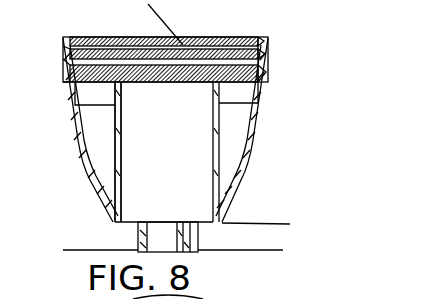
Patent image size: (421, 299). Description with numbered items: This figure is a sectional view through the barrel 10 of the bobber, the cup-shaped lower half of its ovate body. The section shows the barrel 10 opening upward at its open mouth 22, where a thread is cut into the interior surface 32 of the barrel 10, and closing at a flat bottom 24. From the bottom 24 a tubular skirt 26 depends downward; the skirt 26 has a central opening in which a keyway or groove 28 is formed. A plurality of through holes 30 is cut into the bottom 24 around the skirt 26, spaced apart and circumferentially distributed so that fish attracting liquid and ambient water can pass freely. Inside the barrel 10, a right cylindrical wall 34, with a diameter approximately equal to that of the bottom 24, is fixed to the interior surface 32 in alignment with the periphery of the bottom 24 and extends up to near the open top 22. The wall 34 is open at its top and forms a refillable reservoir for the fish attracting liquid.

The barrel 10 is at (256, 141).
The open mouth 22 is at (90, 37).
The through holes 30 is at (243, 36).
The interior surface 32 is at (83, 142).
The right cylindrical wall 34 is at (121, 166).
The flat bottom 24 is at (217, 223).
The tubular skirt 26 is at (192, 253).
The keyway or groove 28 is at (196, 251).